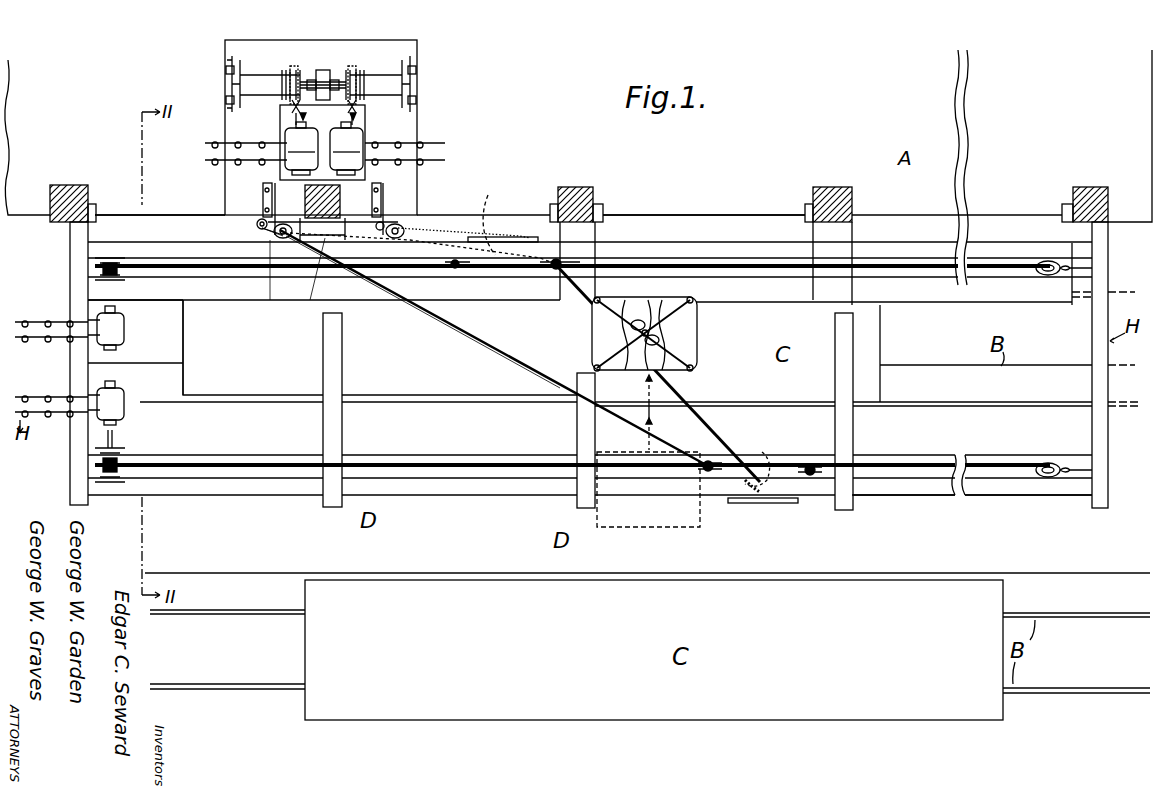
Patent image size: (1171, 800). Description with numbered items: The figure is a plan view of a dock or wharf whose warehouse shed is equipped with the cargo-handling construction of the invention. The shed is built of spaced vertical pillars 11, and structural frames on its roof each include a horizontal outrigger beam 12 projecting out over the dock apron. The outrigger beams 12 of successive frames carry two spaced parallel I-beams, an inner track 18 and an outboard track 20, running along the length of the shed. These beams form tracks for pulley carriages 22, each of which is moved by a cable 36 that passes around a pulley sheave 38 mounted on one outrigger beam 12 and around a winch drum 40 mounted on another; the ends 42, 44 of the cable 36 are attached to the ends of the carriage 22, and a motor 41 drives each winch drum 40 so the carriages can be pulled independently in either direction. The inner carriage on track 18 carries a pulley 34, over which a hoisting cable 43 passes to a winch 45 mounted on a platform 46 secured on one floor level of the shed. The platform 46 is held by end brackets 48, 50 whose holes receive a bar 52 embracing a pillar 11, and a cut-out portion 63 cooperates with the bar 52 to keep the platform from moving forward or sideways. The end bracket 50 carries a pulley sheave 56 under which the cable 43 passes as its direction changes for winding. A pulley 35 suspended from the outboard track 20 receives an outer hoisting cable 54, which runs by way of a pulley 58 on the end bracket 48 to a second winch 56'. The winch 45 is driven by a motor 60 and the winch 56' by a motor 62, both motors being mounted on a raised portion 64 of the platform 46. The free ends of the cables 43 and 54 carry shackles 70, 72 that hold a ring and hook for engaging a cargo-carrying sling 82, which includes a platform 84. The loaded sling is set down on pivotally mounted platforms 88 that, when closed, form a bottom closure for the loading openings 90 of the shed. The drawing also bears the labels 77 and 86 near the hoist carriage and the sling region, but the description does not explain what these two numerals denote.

The vertical pillar 11 is at (88, 192).
The horizontal outrigger beam 12 is at (70, 243).
The inner I-beam track 18 is at (628, 227).
The outboard I-beam track 20 is at (910, 495).
The pulley carriage 22 is at (518, 232).
The pulley 34 is at (489, 215).
The pulley 35 is at (762, 464).
The cable 36 is at (744, 276).
The pulley sheave 38 is at (1043, 274).
The winch drum 40 is at (115, 257).
The motor 41 is at (124, 330).
The cable end 42 is at (557, 280).
The hoisting cable 43 is at (415, 237).
The cable end 44 is at (449, 267).
The winch 45 is at (358, 74).
The platform 46 is at (417, 50).
The end bracket 48 is at (263, 196).
The end bracket 50 is at (383, 199).
The bar 52 is at (319, 270).
The outer hoisting cable 54 is at (398, 304).
The pulley sheave 56 is at (464, 217).
The second winch 56' is at (263, 77).
The pulley 58 is at (282, 243).
The motor 60 is at (342, 136).
The motor 62 is at (290, 140).
The cut-out portion 63 is at (348, 184).
The raised portion 64 is at (372, 140).
The shackle 70 is at (642, 315).
The shackle 72 is at (640, 370).
The carriage base 77 is at (329, 231).
The cargo-carrying sling 82 is at (598, 356).
The platform 84 is at (697, 366).
The pantograph housing 86 is at (681, 332).
The platform 88 is at (240, 300).
The loading opening 90 is at (540, 194).